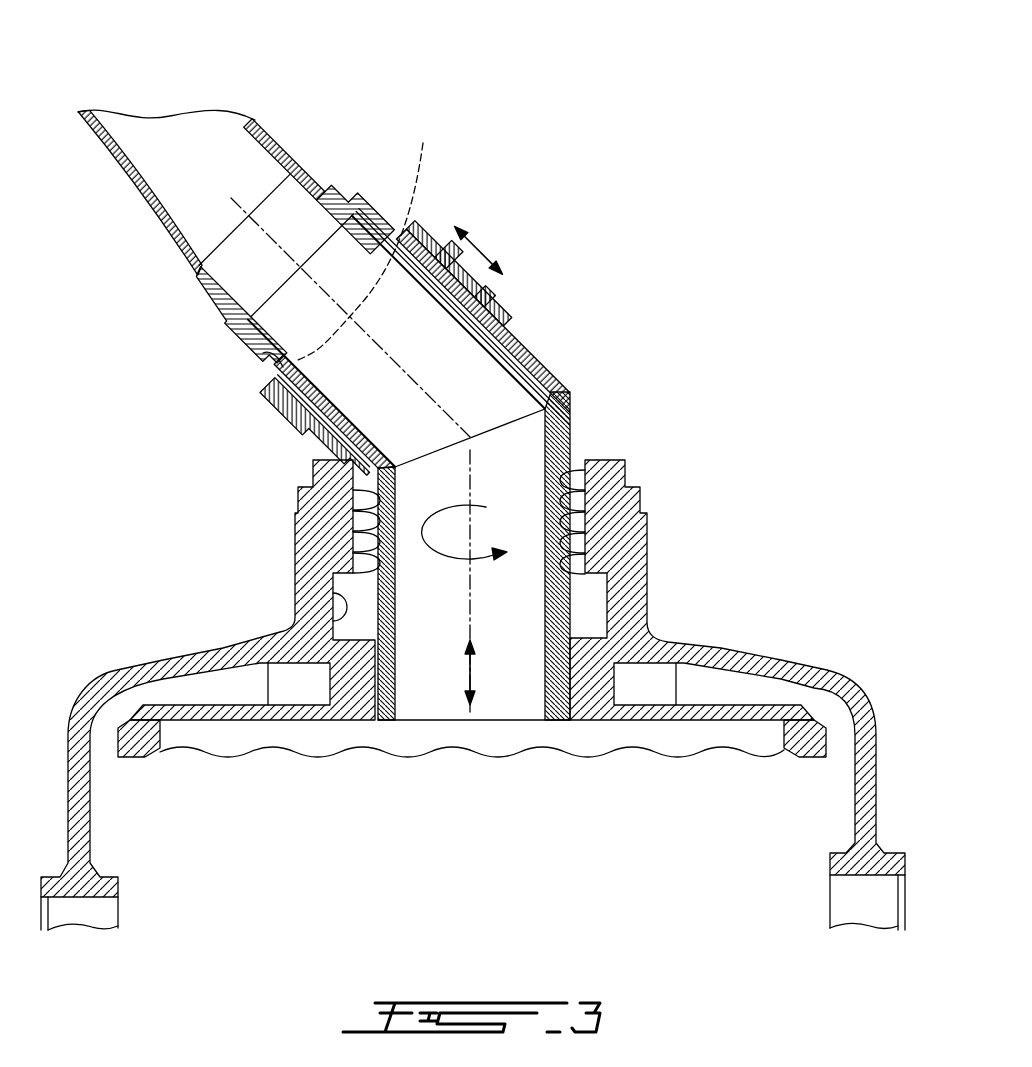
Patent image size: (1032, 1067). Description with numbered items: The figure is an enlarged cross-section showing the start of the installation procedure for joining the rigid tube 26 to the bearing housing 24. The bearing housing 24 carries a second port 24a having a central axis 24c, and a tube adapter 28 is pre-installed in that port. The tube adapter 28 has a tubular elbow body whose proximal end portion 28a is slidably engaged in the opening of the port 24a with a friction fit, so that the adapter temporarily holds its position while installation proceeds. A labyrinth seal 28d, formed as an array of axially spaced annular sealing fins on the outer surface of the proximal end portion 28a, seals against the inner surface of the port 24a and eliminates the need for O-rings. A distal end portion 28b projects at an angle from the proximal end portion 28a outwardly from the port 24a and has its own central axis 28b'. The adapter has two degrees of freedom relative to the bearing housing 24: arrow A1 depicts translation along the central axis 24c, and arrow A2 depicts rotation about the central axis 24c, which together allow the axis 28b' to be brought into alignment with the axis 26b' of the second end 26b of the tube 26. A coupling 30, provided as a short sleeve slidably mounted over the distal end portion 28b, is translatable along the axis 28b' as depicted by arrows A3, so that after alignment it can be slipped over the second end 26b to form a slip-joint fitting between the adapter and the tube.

The bearing housing 24 is at (647, 585).
The second port 24a is at (333, 590).
The central axis of the port 24c is at (470, 467).
The rigid tube 26 is at (178, 143).
The second end of the tube 26b is at (319, 155).
The axis of the second end of the tube 26b' is at (378, 239).
The tube adapter 28 is at (441, 414).
The proximal end portion 28a is at (568, 428).
The distal end portion 28b is at (389, 332).
The central axis of the distal end portion 28b' is at (213, 372).
The labyrinth seal 28d is at (367, 503).
The coupling 30 is at (300, 425).
The first degree of freedom A1 is at (472, 668).
The second degree of freedom A2 is at (437, 552).
The coupling translation arrows A3 is at (487, 247).